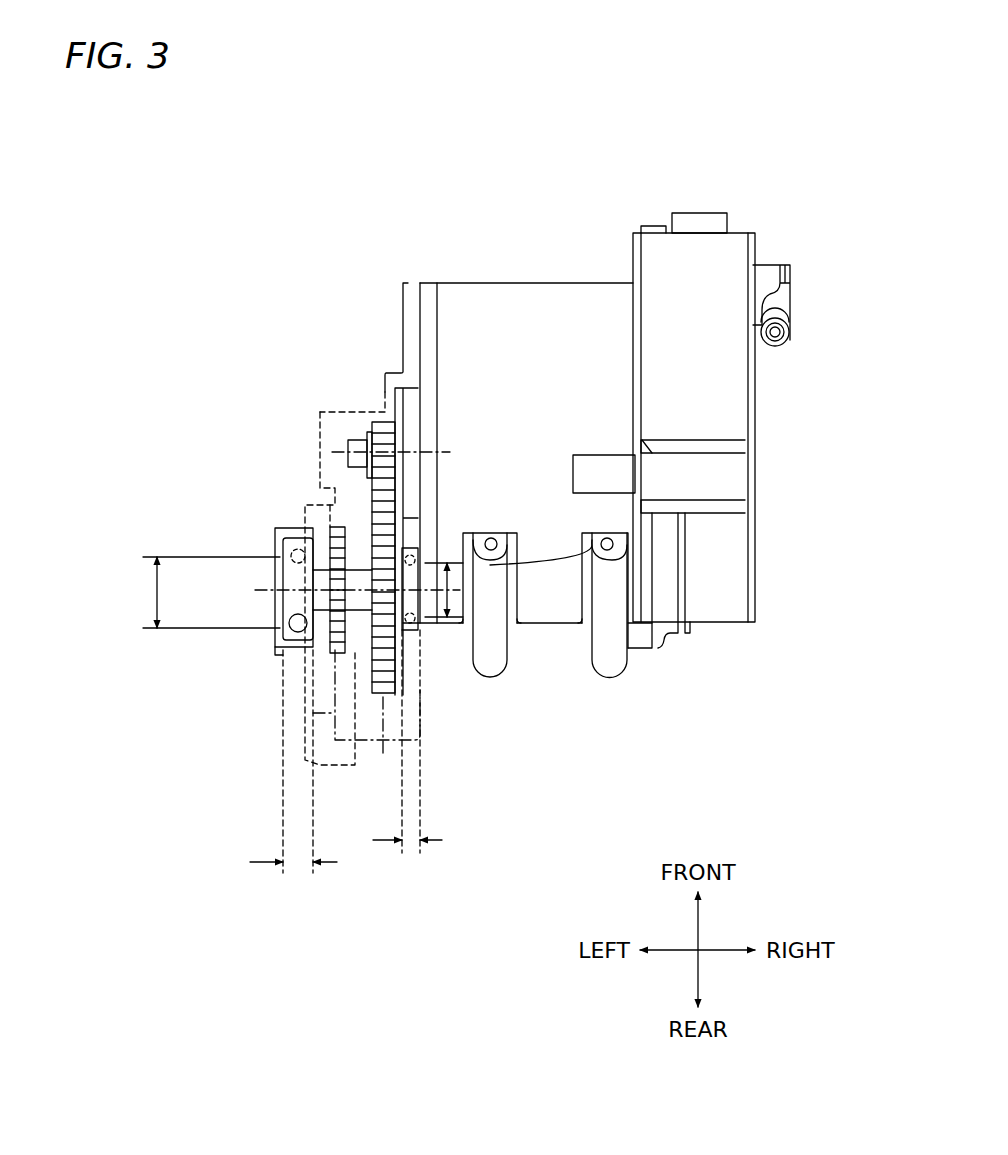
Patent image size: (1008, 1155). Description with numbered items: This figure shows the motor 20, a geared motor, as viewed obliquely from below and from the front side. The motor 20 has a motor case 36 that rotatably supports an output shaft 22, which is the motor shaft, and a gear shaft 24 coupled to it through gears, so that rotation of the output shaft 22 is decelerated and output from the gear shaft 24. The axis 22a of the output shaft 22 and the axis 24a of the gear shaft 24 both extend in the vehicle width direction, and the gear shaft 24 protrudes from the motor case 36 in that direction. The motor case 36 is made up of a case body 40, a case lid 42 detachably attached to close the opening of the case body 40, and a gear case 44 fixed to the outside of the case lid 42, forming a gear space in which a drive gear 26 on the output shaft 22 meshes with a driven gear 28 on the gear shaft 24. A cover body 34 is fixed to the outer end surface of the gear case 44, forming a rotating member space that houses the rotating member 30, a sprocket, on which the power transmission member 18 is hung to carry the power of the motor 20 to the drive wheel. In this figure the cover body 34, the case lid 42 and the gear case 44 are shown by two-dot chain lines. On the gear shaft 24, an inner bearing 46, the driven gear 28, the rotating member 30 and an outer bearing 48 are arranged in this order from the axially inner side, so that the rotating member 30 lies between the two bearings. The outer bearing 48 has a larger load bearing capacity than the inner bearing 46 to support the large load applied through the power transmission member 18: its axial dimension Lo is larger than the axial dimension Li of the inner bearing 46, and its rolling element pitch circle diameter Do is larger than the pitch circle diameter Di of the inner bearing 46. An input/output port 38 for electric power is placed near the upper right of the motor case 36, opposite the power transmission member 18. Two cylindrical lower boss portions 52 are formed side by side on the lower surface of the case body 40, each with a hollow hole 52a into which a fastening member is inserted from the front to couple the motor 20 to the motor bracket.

The power transmission member 18 is at (320, 753).
The motor 20 is at (790, 410).
The output shaft 22 is at (355, 440).
The axis of the output shaft 22a is at (320, 418).
The gear shaft 24 is at (282, 537).
The axis of the gear shaft 24a is at (256, 590).
The drive gear 26 is at (376, 430).
The driven gear 28 is at (392, 682).
The rotating member 30 is at (338, 528).
The cover body 34 is at (282, 656).
The motor case 36 is at (553, 282).
The input/output port 38 is at (704, 213).
The case body 40 is at (473, 305).
The case lid 42 is at (403, 282).
The gear case 44 is at (384, 415).
The inner bearing 46 is at (412, 626).
The outer bearing 48 is at (286, 626).
The lower boss portion 52 is at (495, 666).
The hollow hole 52a is at (500, 548).
The rolling element pitch circle diameter of the outer bearing Do is at (157, 597).
The rolling element pitch circle diameter of the inner bearing Di is at (450, 592).
The axial dimension of the outer bearing Lo is at (277, 862).
The axial dimension of the inner bearing Li is at (419, 840).